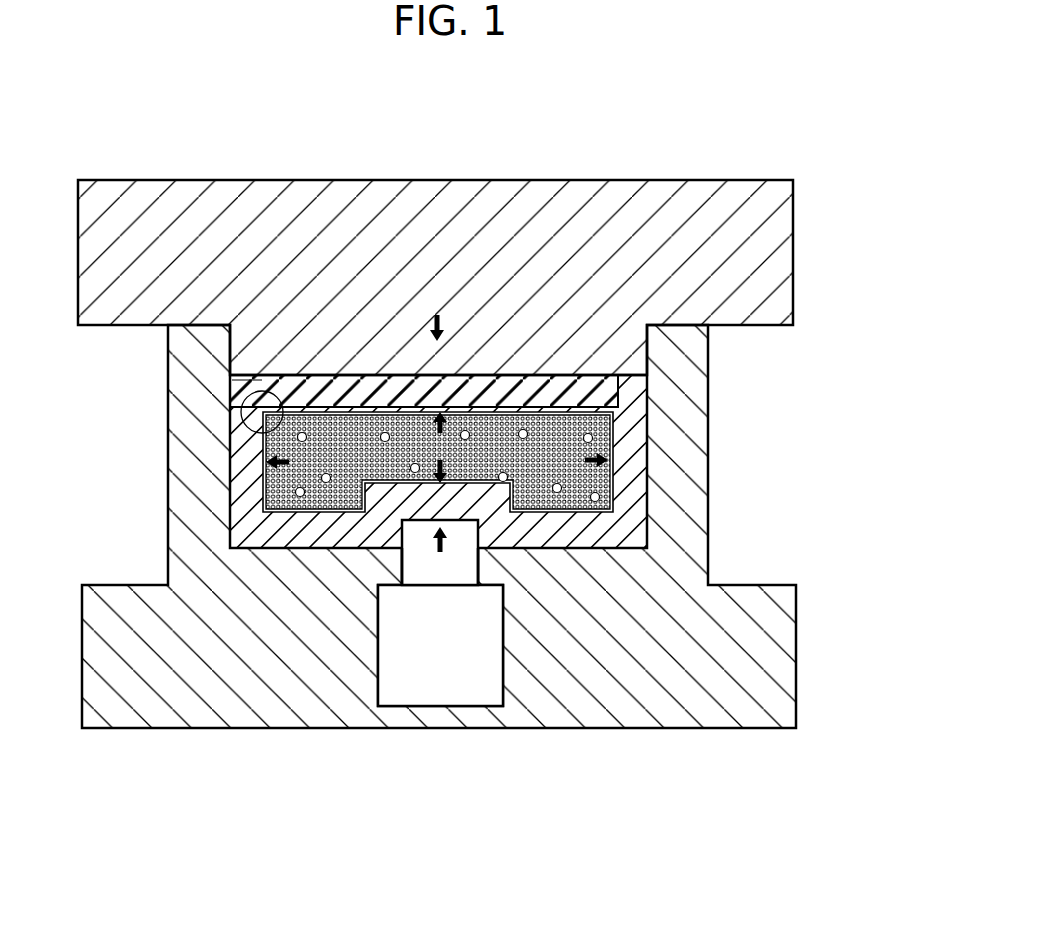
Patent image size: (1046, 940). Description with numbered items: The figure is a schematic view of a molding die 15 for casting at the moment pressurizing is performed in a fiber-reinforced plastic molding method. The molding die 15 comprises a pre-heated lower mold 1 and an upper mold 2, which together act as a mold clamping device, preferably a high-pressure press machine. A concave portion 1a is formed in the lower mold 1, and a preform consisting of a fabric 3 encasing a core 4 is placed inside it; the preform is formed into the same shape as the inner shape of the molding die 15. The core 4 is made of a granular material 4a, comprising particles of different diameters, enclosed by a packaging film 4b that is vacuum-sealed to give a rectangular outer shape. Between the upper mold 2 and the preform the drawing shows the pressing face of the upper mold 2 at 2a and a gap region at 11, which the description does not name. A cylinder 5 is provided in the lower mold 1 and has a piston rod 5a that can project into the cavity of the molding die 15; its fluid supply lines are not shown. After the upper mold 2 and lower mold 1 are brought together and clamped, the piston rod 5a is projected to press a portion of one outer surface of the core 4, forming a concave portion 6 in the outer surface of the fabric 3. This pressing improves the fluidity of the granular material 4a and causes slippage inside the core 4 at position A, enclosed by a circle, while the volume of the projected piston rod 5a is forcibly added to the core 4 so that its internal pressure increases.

The lower mold 1 is at (251, 663).
The concave portion 1a is at (644, 485).
The upper mold 2 is at (250, 265).
The pressing surface of upper die 2a is at (580, 345).
The fabric 3 is at (593, 390).
The core 4 is at (346, 474).
The granular material 4a is at (285, 488).
The packaging film 4b is at (266, 470).
The cylinder 5 is at (453, 677).
The piston rod 5a is at (443, 573).
The concave portion 6 is at (403, 588).
The gap 11 is at (250, 381).
The position A is at (243, 396).
The molding die 15 is at (789, 141).